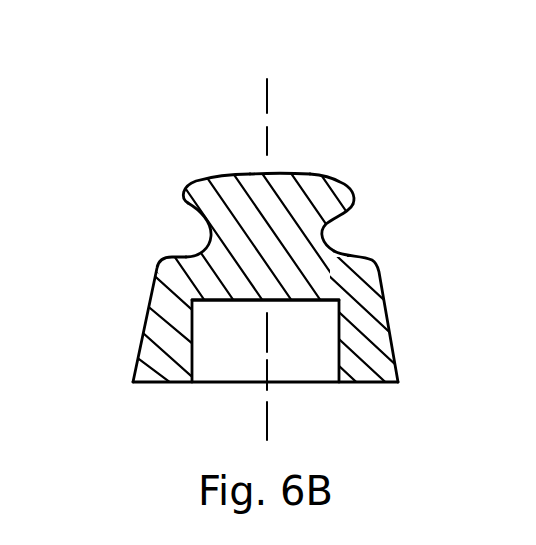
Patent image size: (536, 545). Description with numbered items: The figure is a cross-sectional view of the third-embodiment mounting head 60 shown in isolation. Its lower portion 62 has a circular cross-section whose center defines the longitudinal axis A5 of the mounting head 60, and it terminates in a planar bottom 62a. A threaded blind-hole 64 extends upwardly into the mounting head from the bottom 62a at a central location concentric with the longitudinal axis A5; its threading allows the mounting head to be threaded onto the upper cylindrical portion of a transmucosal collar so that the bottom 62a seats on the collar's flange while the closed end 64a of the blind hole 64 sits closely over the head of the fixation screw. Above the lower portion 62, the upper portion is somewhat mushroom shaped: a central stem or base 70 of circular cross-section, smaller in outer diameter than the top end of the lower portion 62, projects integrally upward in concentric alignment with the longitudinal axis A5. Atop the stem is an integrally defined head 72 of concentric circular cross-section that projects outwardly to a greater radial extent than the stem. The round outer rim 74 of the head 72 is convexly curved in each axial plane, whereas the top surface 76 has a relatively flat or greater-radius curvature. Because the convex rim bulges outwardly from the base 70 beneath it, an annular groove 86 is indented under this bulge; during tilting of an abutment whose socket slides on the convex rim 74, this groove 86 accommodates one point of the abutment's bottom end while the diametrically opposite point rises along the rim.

The mounting head 60 is at (111, 240).
The lower portion 62 is at (370, 355).
The planar bottom 62a is at (160, 390).
The threaded blind-hole 64 is at (310, 372).
The closed end of the blind hole 64a is at (233, 307).
The stem or base 70 is at (297, 237).
The head 72 is at (313, 200).
The outer rim 74 is at (178, 200).
The top surface 76 is at (280, 170).
The annular groove 86 is at (207, 230).
The longitudinal axis A5 is at (275, 92).